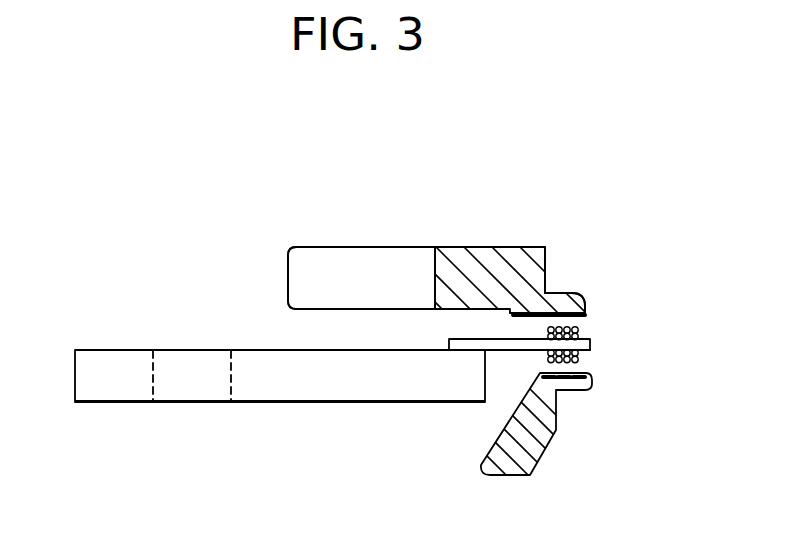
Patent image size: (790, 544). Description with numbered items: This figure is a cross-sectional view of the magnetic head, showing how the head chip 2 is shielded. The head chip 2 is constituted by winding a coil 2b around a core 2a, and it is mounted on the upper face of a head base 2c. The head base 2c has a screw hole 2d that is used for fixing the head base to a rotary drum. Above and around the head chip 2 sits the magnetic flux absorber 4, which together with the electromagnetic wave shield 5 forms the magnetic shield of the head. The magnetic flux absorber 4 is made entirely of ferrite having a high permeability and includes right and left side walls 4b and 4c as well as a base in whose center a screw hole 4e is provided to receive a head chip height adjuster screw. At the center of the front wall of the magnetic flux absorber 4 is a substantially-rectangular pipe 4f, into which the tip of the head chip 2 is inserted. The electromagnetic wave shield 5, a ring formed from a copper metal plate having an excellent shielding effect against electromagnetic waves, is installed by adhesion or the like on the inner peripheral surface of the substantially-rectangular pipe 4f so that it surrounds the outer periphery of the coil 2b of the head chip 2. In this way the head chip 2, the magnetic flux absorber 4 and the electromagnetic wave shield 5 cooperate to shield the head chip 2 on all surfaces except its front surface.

The head chip 2 is at (114, 340).
The core 2a is at (475, 351).
The coil 2b is at (545, 362).
The head base 2c is at (293, 387).
The screw hole 2d is at (192, 402).
The magnetic flux absorber 4 is at (517, 221).
The side wall 4b is at (485, 247).
The side wall 4c is at (546, 262).
The screw hole 4e is at (355, 257).
The substantially-rectangular pipe 4f is at (571, 297).
The electromagnetic wave shield 5 is at (588, 318).